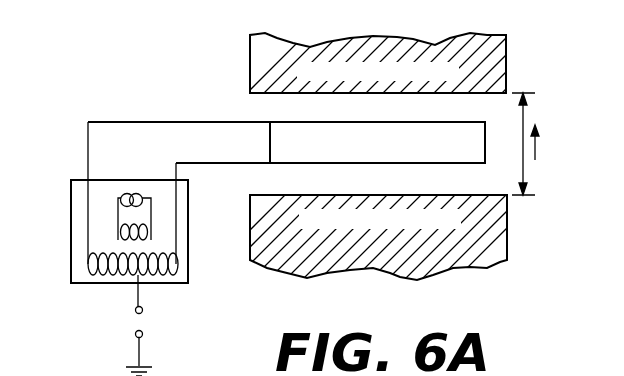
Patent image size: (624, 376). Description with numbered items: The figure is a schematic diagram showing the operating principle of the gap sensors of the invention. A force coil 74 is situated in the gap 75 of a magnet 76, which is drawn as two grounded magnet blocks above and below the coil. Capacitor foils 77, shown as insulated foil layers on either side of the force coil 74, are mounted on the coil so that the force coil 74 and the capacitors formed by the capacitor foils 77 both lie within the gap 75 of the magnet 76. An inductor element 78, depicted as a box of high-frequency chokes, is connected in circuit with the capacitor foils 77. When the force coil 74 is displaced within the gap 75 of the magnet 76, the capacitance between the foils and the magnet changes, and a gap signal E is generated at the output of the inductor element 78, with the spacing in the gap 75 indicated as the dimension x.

The force coil 74 is at (420, 151).
The gap 75 is at (526, 112).
The magnet 76 is at (398, 40).
The capacitor foils 77 is at (280, 121).
The inductor element 78 is at (188, 240).